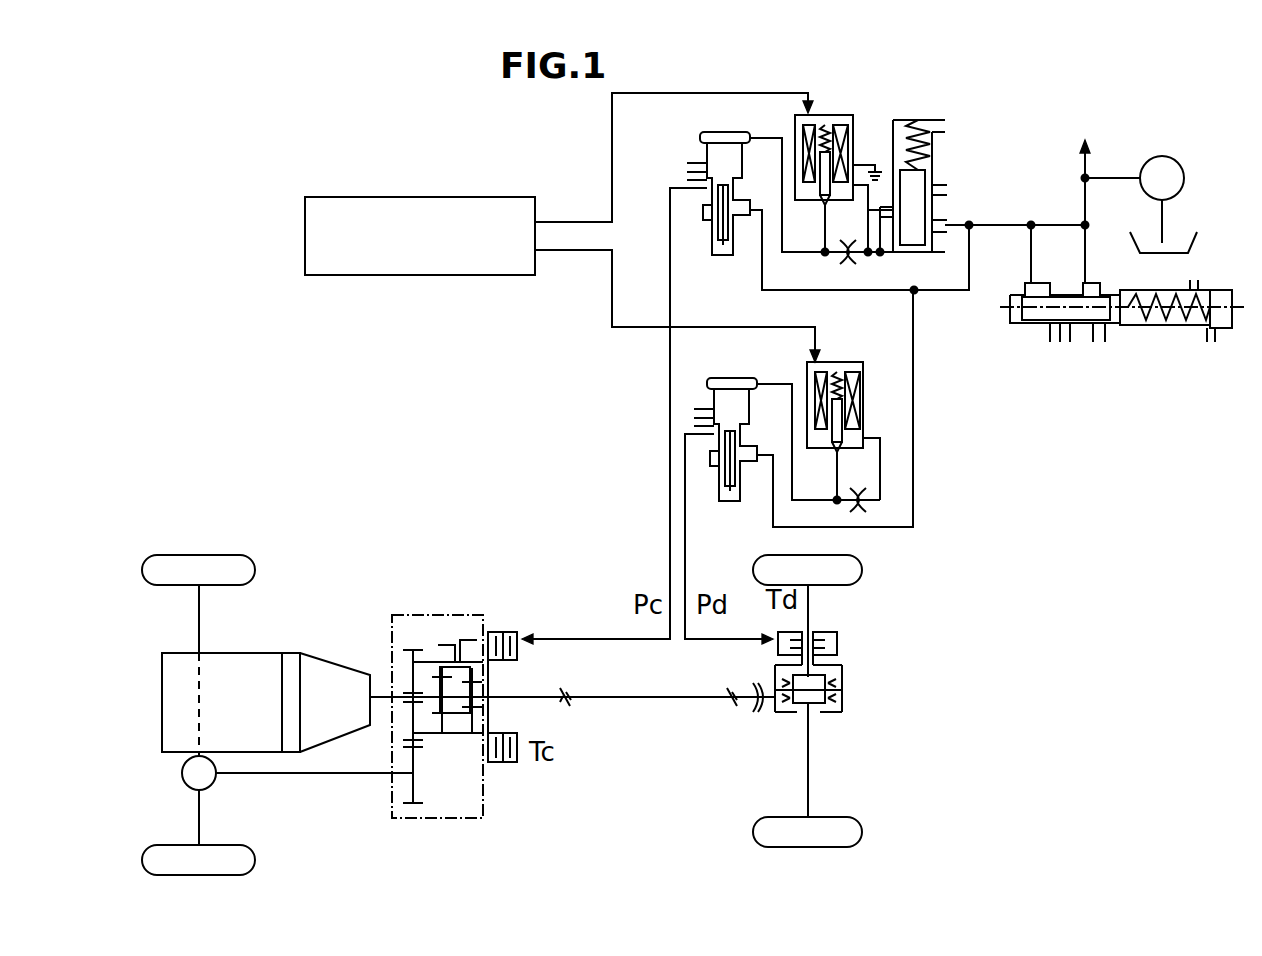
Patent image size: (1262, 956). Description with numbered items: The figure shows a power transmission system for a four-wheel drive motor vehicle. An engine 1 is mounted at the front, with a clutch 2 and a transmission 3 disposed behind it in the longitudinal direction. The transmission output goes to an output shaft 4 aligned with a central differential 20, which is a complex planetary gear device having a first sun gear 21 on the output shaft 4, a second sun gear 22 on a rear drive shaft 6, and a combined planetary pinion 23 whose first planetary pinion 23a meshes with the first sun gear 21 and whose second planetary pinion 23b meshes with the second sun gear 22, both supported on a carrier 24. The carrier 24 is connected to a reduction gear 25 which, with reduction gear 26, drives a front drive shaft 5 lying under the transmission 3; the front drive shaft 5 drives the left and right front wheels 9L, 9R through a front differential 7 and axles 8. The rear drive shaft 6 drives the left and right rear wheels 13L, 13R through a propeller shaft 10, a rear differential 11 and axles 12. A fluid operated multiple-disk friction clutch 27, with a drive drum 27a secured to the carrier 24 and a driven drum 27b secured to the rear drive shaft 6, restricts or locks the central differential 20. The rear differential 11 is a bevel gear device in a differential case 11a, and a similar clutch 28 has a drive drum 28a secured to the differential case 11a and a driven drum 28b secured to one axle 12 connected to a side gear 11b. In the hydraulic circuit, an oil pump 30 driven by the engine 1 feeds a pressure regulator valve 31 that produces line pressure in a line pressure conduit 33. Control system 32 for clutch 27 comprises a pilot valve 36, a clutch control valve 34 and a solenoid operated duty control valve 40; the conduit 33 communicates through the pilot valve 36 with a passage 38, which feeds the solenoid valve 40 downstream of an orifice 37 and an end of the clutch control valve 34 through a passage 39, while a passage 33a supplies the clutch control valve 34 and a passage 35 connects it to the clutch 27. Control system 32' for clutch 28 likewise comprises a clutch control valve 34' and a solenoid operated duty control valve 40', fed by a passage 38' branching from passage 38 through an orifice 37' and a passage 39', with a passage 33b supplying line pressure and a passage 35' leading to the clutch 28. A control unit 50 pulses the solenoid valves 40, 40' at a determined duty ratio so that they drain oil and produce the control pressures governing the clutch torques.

The engine 1 is at (228, 655).
The clutch 2 is at (285, 655).
The transmission 3 is at (328, 663).
The output shaft 4 is at (378, 695).
The front drive shaft 5 is at (330, 775).
The rear drive shaft 6 is at (555, 700).
The front differential 7 is at (182, 773).
The axles 8 is at (200, 813).
The right front wheel 9R is at (243, 553).
The left front wheel 9L is at (253, 846).
The propeller shaft 10 is at (655, 700).
The rear differential 11 is at (862, 705).
The differential case 11a is at (845, 683).
The side gear 11b is at (835, 660).
The axles 12 is at (810, 768).
The right rear wheel 13R is at (862, 572).
The left rear wheel 13L is at (862, 832).
The central differential 20 is at (450, 818).
The first sun gear 21 is at (445, 718).
The second sun gear 22 is at (470, 720).
The combined planetary pinion 23 is at (455, 648).
The first planetary pinion 23a is at (438, 645).
The second planetary pinion 23b is at (477, 640).
The carrier 24 is at (432, 662).
The reduction gear 25 is at (412, 650).
The reduction gear 26 is at (413, 806).
The fluid operated multiple-disk friction clutch 27 is at (538, 652).
The drive drum 27a is at (512, 632).
The driven drum 27b is at (505, 662).
The fluid operated multiple-disk friction clutch 28 is at (835, 635).
The drive drum 28a is at (828, 630).
The driven drum 28b is at (775, 655).
The oil pump 30 is at (1165, 155).
The pressure regulator valve 31 is at (1165, 333).
The control system 32 is at (938, 152).
The control system 32' is at (967, 463).
The line pressure conduit 33 is at (1005, 225).
The passage 33a is at (762, 270).
The passage 33b is at (915, 418).
The clutch control valve 34 is at (704, 176).
The clutch control valve 34' is at (725, 415).
The passage 35 is at (614, 416).
The passage 35' is at (729, 539).
The pilot valve 36 is at (935, 148).
The orifice 37 is at (844, 235).
The orifice 37' is at (922, 524).
The passage 38 is at (821, 231).
The passage 38' is at (865, 423).
The passage 39 is at (828, 236).
The passage 39' is at (833, 469).
The solenoid operated duty control valve 40 is at (845, 183).
The solenoid operated duty control valve 40' is at (838, 403).
The control unit 50 is at (455, 275).